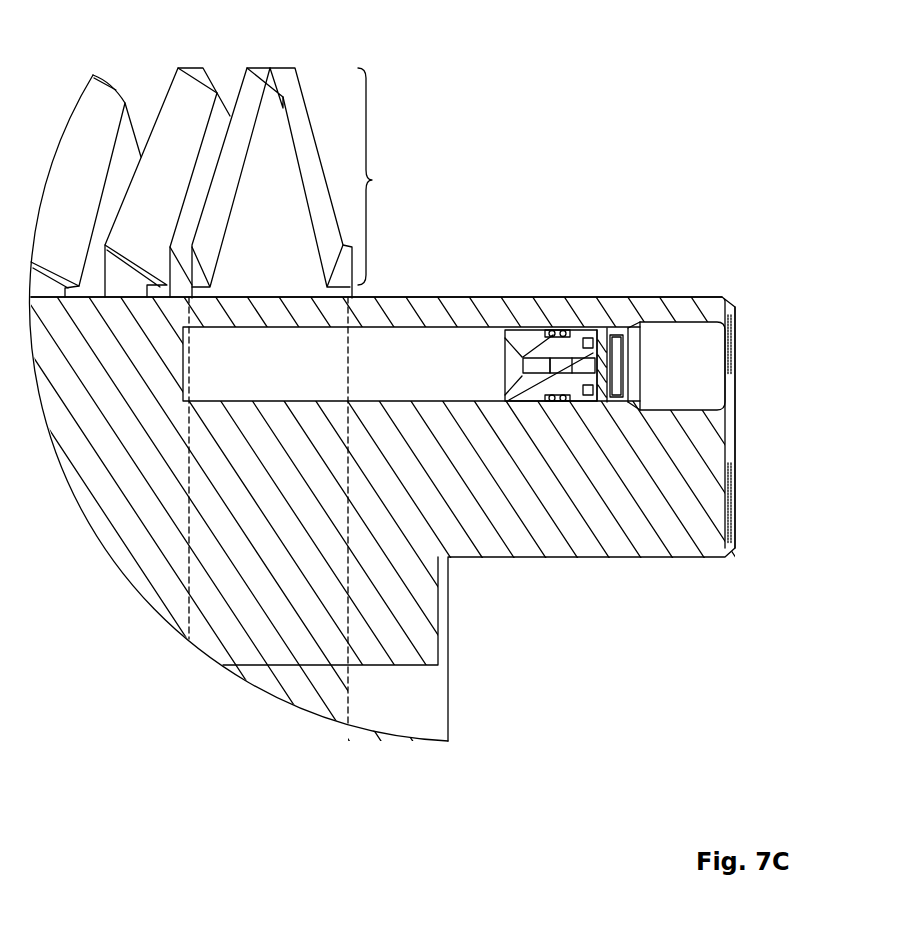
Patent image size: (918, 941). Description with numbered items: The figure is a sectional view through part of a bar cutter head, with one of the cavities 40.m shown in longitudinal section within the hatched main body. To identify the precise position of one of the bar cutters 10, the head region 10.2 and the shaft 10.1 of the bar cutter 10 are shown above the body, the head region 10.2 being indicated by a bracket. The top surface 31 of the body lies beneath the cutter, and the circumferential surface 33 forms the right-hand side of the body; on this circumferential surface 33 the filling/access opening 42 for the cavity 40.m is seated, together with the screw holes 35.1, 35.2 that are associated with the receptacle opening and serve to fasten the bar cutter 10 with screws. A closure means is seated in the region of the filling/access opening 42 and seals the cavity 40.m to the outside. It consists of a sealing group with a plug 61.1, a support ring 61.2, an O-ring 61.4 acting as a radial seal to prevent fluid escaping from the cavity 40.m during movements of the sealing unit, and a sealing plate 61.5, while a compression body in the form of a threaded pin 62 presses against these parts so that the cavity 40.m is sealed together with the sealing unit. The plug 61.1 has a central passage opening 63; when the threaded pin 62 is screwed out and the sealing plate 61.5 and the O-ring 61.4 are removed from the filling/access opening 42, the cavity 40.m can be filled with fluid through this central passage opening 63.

The bar cutter 10 is at (282, 75).
The shaft 10.1 is at (190, 515).
The head region 10.2 is at (395, 176).
The top surface of gear body 31 is at (388, 295).
The circumferential surface 33 is at (730, 430).
The screw hole 35.1 is at (735, 342).
The screw hole 35.2 is at (735, 507).
The cavity 40.m is at (312, 373).
The filling/access opening 42 is at (735, 353).
The plug 61.1 is at (520, 340).
The support ring 61.2 is at (560, 401).
The O-ring 61.4 is at (588, 340).
The sealing plate 61.5 is at (603, 340).
The threaded pin 62 is at (700, 367).
The central passage opening 63 is at (520, 366).